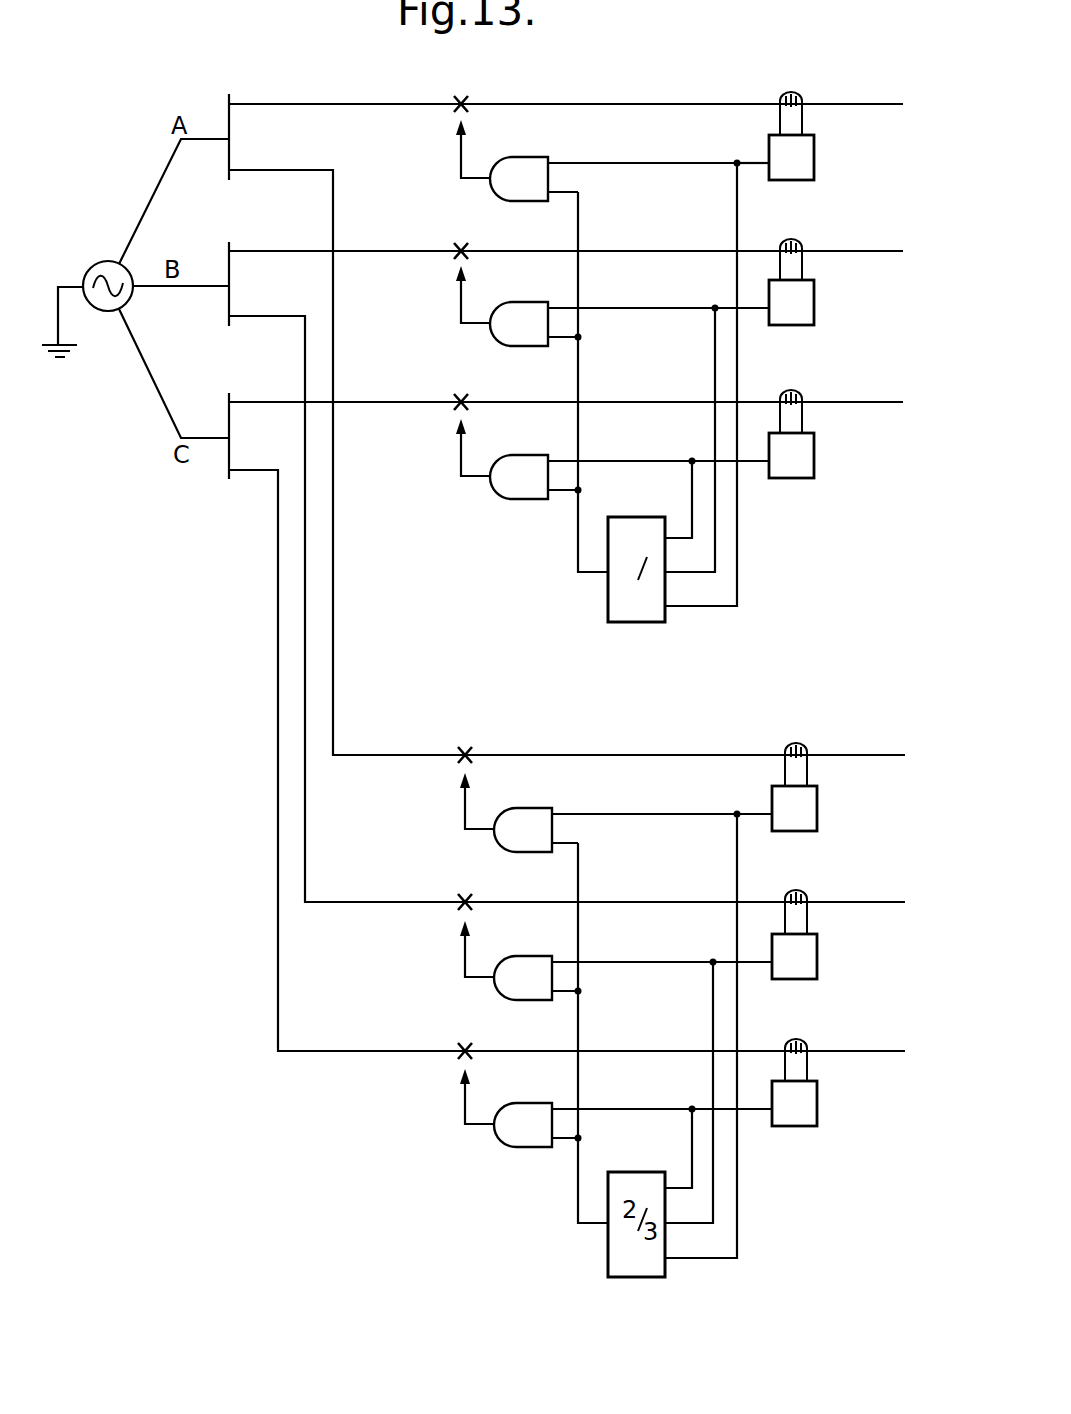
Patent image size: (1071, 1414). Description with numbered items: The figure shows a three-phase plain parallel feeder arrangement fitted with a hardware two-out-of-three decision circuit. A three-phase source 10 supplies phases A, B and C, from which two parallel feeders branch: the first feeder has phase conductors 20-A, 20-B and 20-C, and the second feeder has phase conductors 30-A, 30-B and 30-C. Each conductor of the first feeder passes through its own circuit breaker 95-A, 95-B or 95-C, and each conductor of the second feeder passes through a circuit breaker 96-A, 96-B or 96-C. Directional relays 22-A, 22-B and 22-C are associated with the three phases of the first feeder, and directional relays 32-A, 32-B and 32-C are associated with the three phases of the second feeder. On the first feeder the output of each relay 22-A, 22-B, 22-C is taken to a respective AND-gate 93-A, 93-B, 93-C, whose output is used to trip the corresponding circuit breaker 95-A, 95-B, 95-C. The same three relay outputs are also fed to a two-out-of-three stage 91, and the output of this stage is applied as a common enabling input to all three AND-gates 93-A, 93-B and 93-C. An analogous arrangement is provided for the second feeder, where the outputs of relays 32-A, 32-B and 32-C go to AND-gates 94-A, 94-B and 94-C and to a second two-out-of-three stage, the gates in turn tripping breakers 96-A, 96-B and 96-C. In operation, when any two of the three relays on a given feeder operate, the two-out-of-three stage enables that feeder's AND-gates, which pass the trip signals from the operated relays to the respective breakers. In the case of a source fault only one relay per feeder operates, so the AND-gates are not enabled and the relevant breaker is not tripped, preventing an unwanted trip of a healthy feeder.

The three-phase source 10 is at (105, 312).
The phase A conductor of first parallel feeder 20-A is at (566, 93).
The phase B conductor of first parallel feeder 20-B is at (566, 239).
The phase C conductor of first parallel feeder 20-C is at (566, 391).
The phase A conductor of second feeder 30-A is at (567, 449).
The phase B conductor of second feeder 30-B is at (567, 596).
The phase C conductor of second feeder 30-C is at (567, 748).
The directional relay for phase A 22-A is at (814, 167).
The directional relay for phase B 22-B is at (814, 312).
The directional relay for phase C 22-C is at (814, 465).
The directional relay for phase A of second feeder 32-A is at (817, 818).
The directional relay for phase B of second feeder 32-B is at (817, 966).
The directional relay for phase C of second feeder 32-C is at (817, 1113).
The AND-gate for phase A 93-A is at (530, 142).
The AND-gate for phase B 93-B is at (530, 287).
The AND-gate for phase C 93-C is at (525, 453).
The AND-gate for phase A of second feeder 94-A is at (535, 792).
The AND-gate for phase B of second feeder 94-B is at (535, 940).
The AND-gate for phase C of second feeder 94-C is at (537, 1087).
The circuit breaker for phase A 95-A is at (458, 98).
The circuit breaker for phase B 95-B is at (458, 244).
The circuit breaker for phase C 95-C is at (459, 396).
The circuit breaker for phase A of second feeder 96-A is at (465, 752).
The circuit breaker for phase B of second feeder 96-B is at (470, 898).
The circuit breaker for phase C of second feeder 96-C is at (472, 1047).
The 2-out-of-3 stage 91 is at (655, 622).